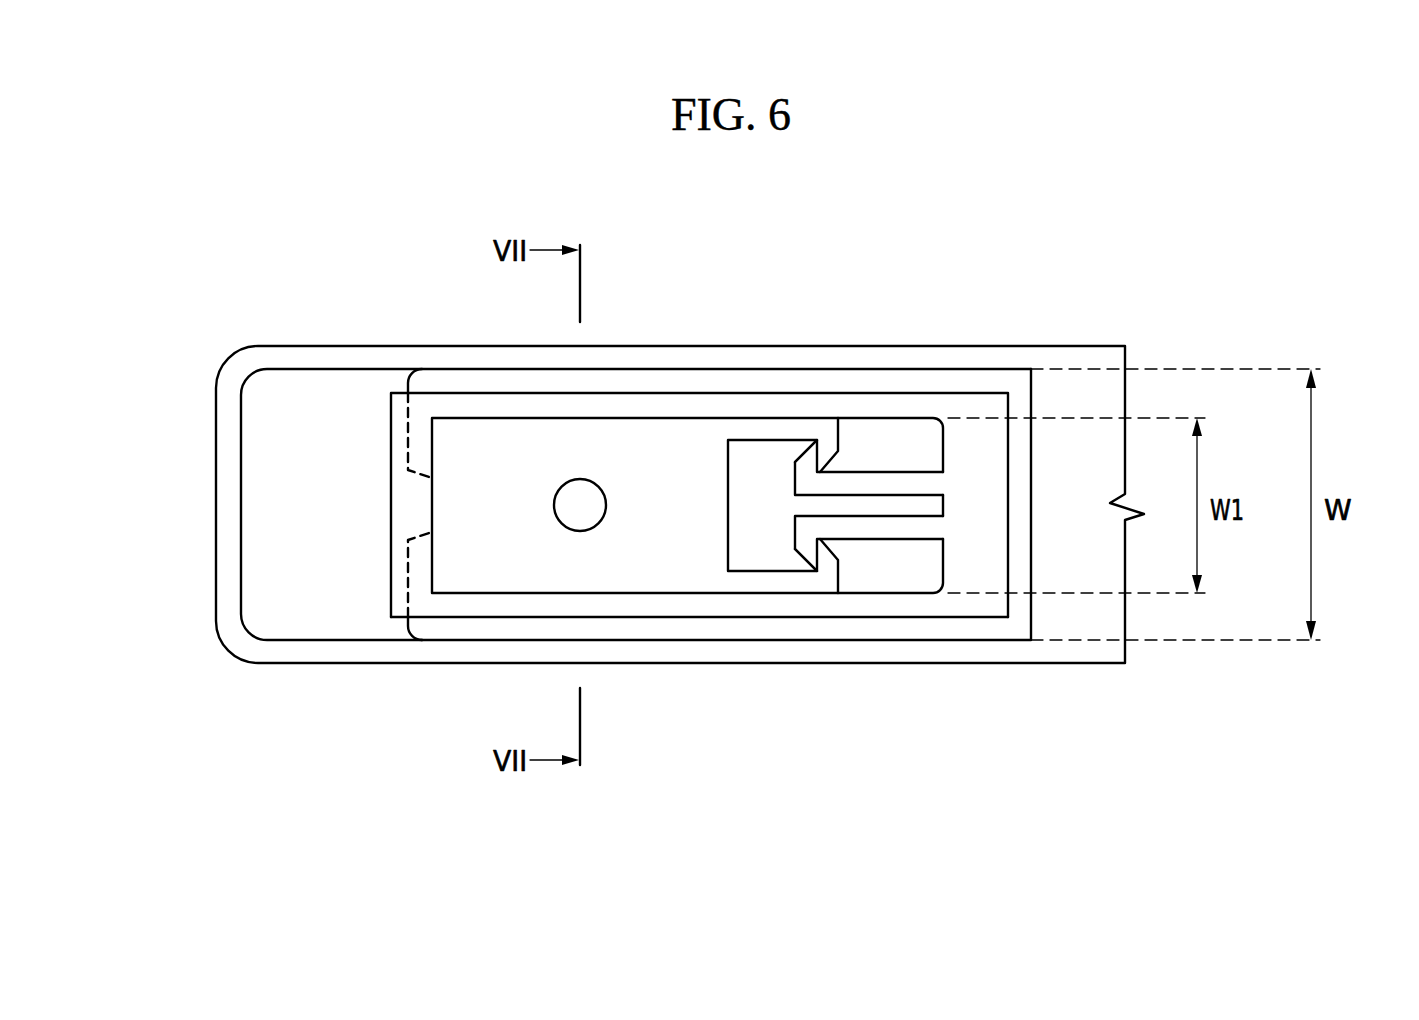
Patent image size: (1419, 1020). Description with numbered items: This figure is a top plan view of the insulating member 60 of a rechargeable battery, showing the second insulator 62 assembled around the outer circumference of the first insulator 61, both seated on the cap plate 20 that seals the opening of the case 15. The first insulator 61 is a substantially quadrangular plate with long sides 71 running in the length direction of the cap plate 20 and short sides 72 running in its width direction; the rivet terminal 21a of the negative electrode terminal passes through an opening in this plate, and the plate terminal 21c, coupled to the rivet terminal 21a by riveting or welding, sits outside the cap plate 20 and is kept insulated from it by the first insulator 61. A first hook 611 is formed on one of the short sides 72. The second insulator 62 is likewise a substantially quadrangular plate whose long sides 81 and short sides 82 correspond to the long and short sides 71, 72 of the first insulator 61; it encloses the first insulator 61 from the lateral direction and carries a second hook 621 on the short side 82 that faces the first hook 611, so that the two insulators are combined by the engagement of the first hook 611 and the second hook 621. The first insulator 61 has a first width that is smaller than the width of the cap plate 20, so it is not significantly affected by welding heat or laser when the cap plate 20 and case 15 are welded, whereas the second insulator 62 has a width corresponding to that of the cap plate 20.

The case 15 is at (231, 413).
The cap plate 20 is at (273, 593).
The rivet terminal 21a is at (580, 505).
The plate terminal 21c is at (898, 617).
The insulating member 60 is at (1092, 259).
The first insulator 61 is at (940, 406).
The second insulator 62 is at (1032, 366).
The first hook 611 is at (836, 446).
The second hook 621 is at (800, 448).
The long sides 71 is at (663, 417).
The short sides 72 is at (431, 505).
The long sides 81 is at (736, 368).
The short sides 82 is at (1032, 613).